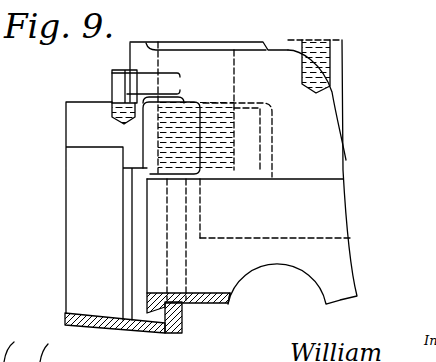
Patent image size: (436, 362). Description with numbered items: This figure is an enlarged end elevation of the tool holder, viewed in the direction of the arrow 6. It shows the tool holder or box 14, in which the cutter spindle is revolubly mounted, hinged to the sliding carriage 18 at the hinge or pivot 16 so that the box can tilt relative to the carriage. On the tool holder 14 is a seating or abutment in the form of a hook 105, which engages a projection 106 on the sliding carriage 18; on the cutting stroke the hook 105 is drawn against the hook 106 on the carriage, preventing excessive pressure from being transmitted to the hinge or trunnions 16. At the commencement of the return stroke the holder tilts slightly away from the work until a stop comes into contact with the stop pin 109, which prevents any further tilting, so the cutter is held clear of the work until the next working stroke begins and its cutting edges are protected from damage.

The arrow 6 is at (278, 3).
The tool holder or box 14 is at (252, 172).
The hinge or pivot 16 is at (200, 67).
The sliding carriage 18 is at (106, 181).
The hook 105 is at (147, 262).
The projection 106 is at (186, 318).
The stop pin 109 is at (112, 88).